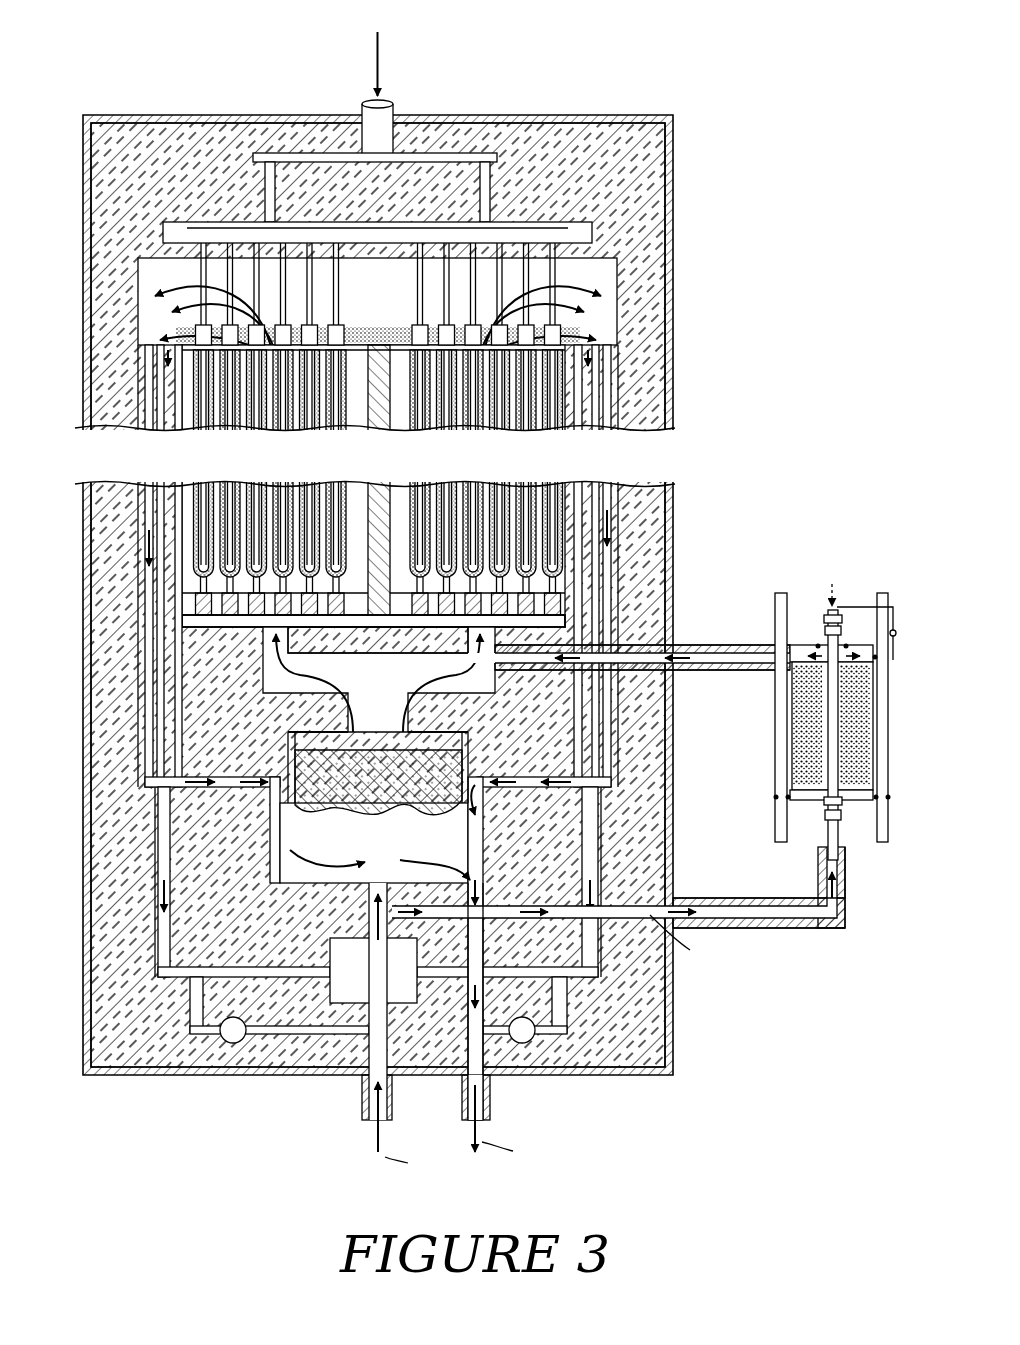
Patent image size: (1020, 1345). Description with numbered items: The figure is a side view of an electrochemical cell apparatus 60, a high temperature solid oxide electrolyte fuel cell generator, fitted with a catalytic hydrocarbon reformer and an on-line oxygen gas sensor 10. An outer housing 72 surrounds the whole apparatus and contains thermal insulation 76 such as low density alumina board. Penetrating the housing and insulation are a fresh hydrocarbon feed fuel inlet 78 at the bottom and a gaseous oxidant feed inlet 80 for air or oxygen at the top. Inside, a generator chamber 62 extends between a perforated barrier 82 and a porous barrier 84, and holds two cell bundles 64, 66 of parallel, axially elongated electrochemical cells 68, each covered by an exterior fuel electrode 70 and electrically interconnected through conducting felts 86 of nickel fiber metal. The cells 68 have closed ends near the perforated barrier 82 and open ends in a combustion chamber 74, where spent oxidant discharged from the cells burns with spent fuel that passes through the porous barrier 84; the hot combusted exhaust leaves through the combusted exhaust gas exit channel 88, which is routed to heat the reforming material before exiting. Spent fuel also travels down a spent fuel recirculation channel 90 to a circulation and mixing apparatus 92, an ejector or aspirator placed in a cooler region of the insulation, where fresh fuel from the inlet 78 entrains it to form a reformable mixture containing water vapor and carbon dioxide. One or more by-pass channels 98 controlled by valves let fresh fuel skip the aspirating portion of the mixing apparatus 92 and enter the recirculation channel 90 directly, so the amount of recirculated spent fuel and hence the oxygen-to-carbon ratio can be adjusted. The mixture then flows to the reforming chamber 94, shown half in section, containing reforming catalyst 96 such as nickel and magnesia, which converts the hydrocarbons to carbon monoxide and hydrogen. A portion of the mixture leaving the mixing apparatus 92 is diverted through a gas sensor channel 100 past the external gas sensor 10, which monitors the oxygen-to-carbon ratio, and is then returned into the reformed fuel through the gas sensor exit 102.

The electrochemical cell apparatus 60 is at (479, 589).
The outer housing 72 is at (560, 116).
The thermal insulation 76 is at (97, 214).
The gaseous oxidant feed inlet 80 is at (395, 112).
The combustion chamber 74 is at (612, 290).
The generator chamber 62 is at (300, 471).
The cell bundle 64 is at (197, 436).
The cell bundle 66 is at (408, 436).
The porous barrier 84 is at (379, 343).
The conducting felts 86 is at (365, 429).
The electrochemical cells 68 is at (205, 585).
The fuel electrode 70 is at (306, 612).
The perforated barrier 82 is at (150, 720).
The combusted exhaust gas exit channel 88 is at (148, 781).
The spent fuel recirculation channel 90 is at (157, 807).
The reforming chamber 94 is at (376, 926).
The reforming catalyst 96 is at (388, 800).
The gas sensor exit 102 is at (708, 645).
The gas sensor channel 100 is at (845, 905).
The gas sensor 10 is at (861, 880).
The circulation and mixing apparatus 92 is at (373, 970).
The fresh hydrocarbon feed fuel inlet 78 is at (372, 1128).
The by-pass channels 98 is at (258, 1040).